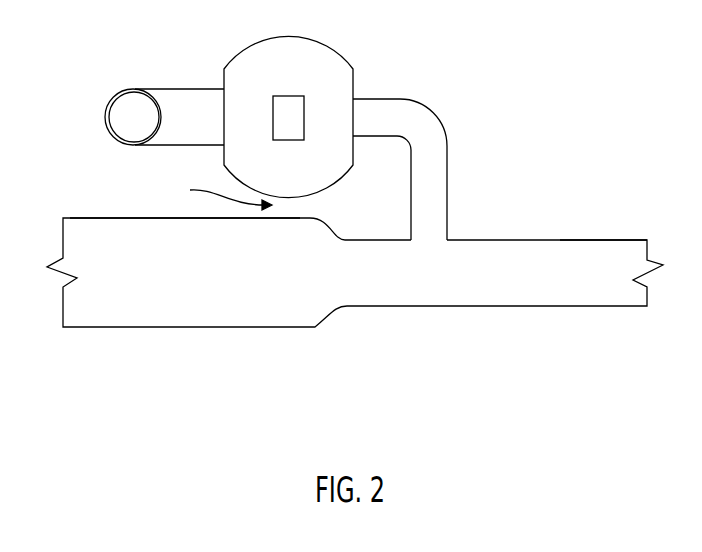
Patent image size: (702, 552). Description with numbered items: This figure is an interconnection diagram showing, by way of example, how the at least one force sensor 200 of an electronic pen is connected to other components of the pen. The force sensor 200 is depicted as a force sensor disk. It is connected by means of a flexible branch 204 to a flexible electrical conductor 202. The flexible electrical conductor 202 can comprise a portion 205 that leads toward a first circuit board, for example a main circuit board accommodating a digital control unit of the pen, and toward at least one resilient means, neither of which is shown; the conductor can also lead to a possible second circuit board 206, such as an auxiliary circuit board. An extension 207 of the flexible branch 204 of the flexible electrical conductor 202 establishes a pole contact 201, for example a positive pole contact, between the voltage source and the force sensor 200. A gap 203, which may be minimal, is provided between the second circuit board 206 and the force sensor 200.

The force sensor 200 is at (302, 96).
The pole contact 201 is at (113, 97).
The extension 207 is at (179, 97).
The flexible branch 204 is at (449, 173).
The flexible electrical conductor 202 is at (532, 240).
The portion 205 is at (617, 245).
The second circuit board 206 is at (85, 225).
The gap 203 is at (214, 195).